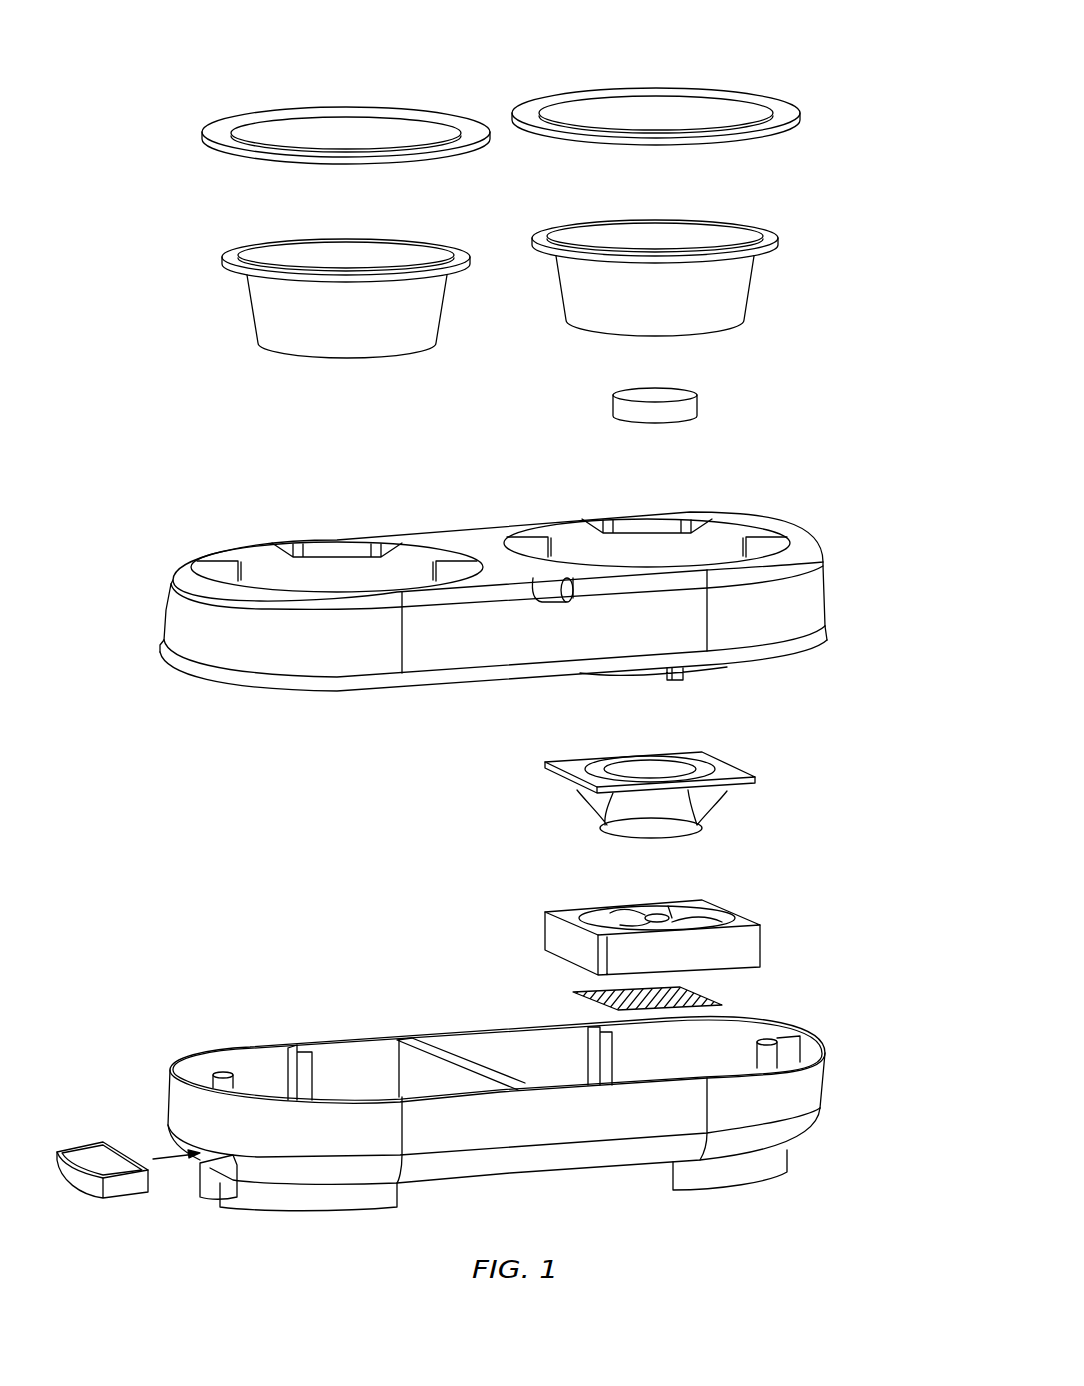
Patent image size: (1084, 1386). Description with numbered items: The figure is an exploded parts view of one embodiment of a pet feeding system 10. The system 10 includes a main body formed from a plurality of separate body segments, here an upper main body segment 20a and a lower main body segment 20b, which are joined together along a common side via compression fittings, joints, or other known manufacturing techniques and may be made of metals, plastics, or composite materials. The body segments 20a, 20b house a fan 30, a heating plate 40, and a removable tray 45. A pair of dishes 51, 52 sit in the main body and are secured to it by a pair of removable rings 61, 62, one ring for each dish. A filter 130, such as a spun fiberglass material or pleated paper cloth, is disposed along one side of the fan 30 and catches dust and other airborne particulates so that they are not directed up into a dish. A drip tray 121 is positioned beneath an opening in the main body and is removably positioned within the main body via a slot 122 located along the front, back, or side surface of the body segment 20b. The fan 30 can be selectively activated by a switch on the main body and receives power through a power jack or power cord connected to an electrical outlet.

The pet feeding system 10 is at (182, 68).
The removable ring 62 is at (197, 140).
The removable ring 61 is at (810, 117).
The dish 52 is at (228, 305).
The dish 51 is at (763, 288).
The removable tray 45 is at (708, 402).
The main body segment 20a is at (830, 593).
The heating plate 40 is at (730, 810).
The fan 30 is at (770, 945).
The filter 130 is at (732, 993).
The main body segment 20b is at (837, 1095).
The drip tray 121 is at (128, 1188).
The slot 122 is at (223, 1175).